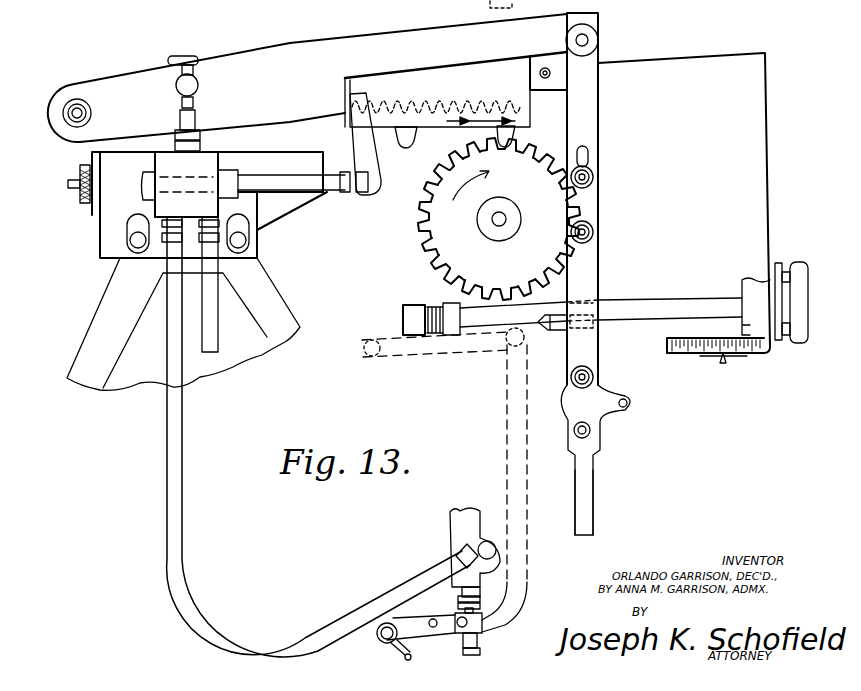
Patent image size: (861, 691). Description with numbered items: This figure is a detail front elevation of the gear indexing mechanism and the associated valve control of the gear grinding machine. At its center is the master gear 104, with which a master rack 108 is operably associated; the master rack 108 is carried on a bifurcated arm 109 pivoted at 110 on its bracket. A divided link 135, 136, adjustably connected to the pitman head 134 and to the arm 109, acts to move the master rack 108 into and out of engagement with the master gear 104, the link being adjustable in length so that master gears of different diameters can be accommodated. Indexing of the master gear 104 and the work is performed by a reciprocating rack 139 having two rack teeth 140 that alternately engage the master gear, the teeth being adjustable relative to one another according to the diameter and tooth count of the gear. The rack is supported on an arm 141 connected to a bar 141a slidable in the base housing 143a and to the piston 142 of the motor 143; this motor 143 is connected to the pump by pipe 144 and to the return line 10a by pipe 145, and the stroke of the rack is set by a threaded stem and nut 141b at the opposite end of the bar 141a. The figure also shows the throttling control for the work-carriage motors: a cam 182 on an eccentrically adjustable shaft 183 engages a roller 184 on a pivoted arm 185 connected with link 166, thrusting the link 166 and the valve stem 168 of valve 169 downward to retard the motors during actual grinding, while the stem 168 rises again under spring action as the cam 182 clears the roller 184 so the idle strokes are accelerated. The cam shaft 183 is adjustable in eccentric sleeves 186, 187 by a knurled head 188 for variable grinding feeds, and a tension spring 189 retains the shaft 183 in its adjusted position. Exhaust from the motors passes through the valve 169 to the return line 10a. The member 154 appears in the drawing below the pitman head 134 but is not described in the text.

The return line 10a is at (480, 547).
The master gear 104 is at (427, 228).
The master rack 108 is at (537, 65).
The bifurcated arm 109 is at (314, 18).
The pivot 110 is at (86, 113).
The pitman head 134 is at (597, 423).
The divided link 135 is at (590, 203).
The divided link 136 is at (585, 63).
The reciprocating rack 139 is at (400, 100).
The rack teeth 140 is at (498, 130).
The arm 141 is at (358, 123).
The bar 141a is at (323, 197).
The threaded stem and nut 141b is at (88, 203).
The piston 142 is at (247, 182).
The motor 143 is at (190, 136).
The base housing 143a is at (110, 237).
The pipe 144 is at (213, 337).
The pipe 145 is at (173, 402).
The rod 154 is at (592, 472).
The link 166 is at (513, 553).
The valve stem 168 is at (458, 603).
The valve 169 is at (462, 520).
The cam 182 is at (553, 330).
The shaft 183 is at (603, 310).
The roller 184 is at (502, 347).
The pivoted arm 185 is at (423, 353).
The eccentric sleeve 186 is at (758, 298).
The eccentric sleeve 187 is at (403, 312).
The knurled head 188 is at (812, 235).
The tension spring 189 is at (440, 303).